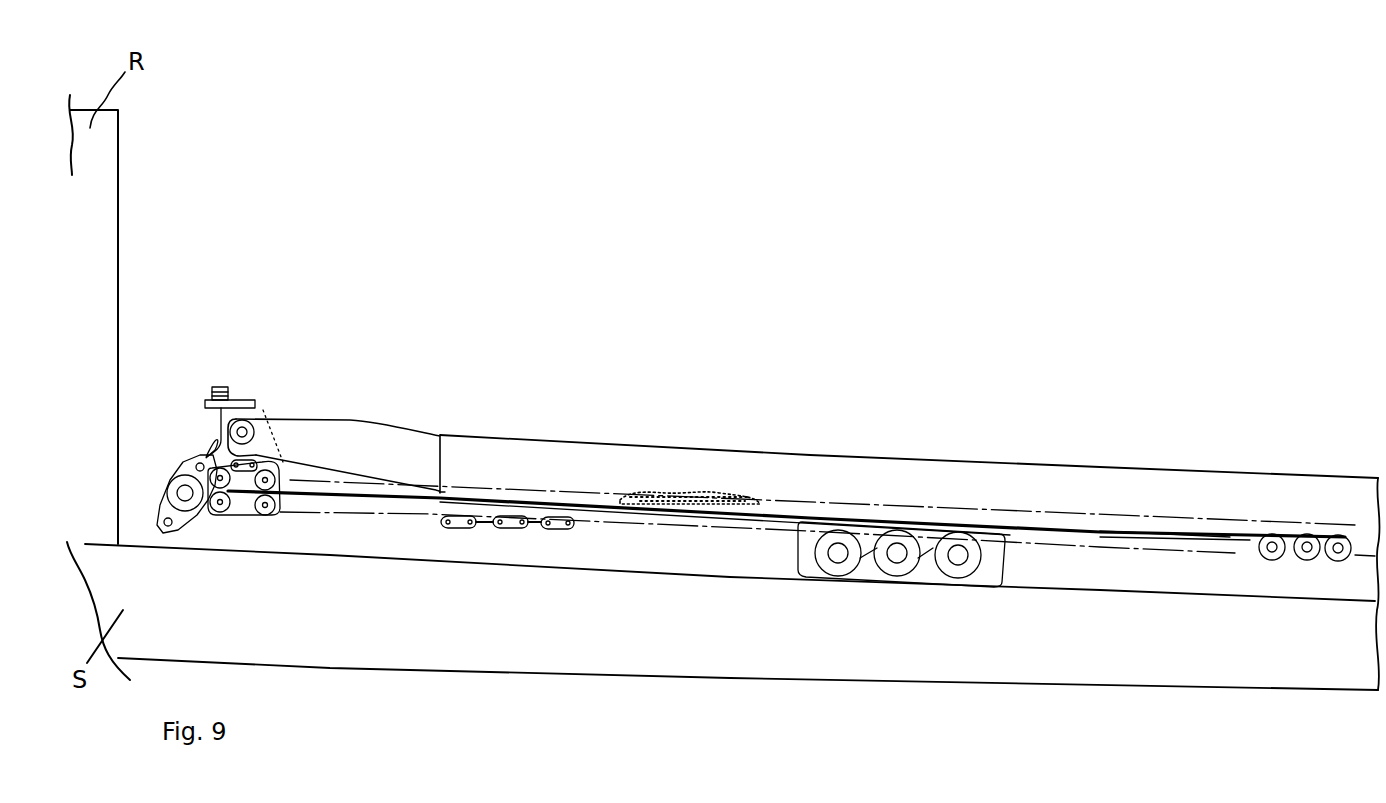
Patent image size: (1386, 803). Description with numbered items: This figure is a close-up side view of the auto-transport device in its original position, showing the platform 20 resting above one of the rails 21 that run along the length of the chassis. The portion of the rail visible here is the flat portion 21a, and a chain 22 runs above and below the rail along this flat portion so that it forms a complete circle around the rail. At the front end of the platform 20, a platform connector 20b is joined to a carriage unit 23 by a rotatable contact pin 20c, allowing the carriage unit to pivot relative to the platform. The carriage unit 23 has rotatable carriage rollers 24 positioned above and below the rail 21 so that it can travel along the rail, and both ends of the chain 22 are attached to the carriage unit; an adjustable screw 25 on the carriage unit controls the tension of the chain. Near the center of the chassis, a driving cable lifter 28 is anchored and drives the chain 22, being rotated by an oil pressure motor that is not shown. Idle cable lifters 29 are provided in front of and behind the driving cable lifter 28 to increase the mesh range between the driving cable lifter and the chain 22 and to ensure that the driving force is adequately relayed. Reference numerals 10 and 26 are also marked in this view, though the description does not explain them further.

The boom 10 is at (1008, 453).
The platform 20 is at (667, 445).
The platform connector 20b is at (373, 435).
The rotatable contact pin 20c is at (250, 430).
The rail 21 is at (367, 500).
The flat portion 21a is at (1113, 533).
The chain 22 is at (548, 527).
The carriage unit 23 is at (252, 398).
The carriage roller 24 is at (220, 502).
The adjustable screw 25 is at (222, 387).
The support rollers 26 is at (1308, 560).
The driving cable lifter 28 is at (897, 565).
The idle cable lifter 29 is at (832, 562).